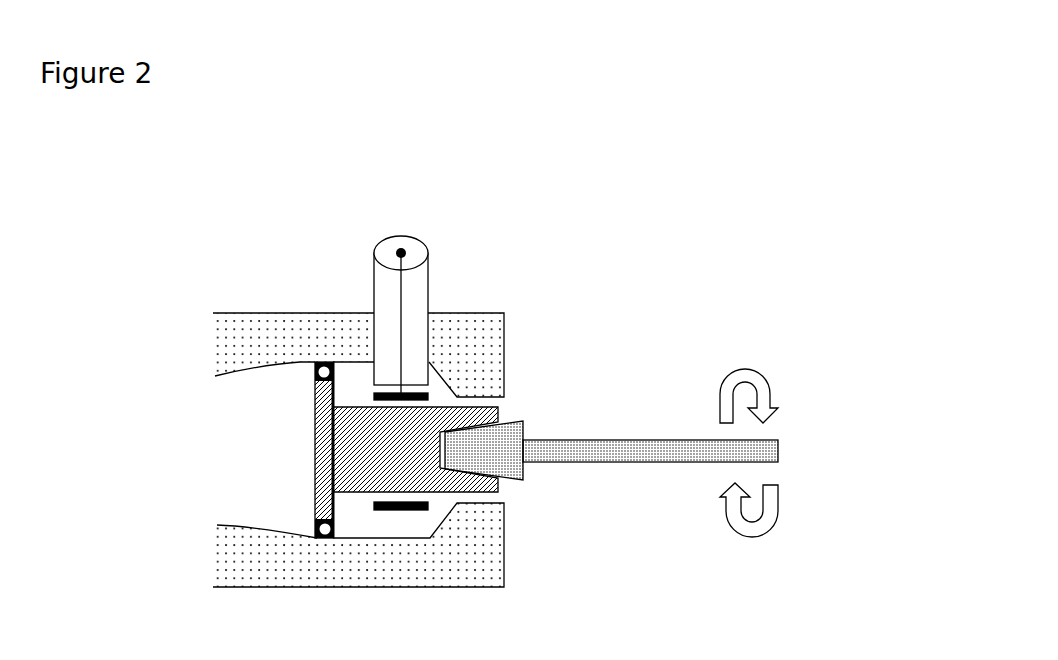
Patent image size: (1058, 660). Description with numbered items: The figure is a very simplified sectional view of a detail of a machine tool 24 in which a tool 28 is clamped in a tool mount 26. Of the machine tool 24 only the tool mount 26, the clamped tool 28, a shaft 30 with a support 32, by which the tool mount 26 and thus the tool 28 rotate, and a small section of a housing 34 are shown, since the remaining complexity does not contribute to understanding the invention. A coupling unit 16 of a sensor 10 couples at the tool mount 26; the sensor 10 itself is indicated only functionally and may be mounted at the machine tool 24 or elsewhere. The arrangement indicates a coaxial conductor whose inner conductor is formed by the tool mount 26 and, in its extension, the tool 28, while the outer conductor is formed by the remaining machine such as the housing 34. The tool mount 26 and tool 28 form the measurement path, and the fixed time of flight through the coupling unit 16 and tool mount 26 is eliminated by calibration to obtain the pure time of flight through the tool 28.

The sensor 10 is at (401, 253).
The coupling unit 16 is at (410, 508).
The machine tool 24 is at (127, 260).
The tool mount 26 is at (373, 425).
The tool 28 is at (598, 450).
The shaft 30 is at (315, 460).
The support 32 is at (327, 538).
The housing 34 is at (242, 557).